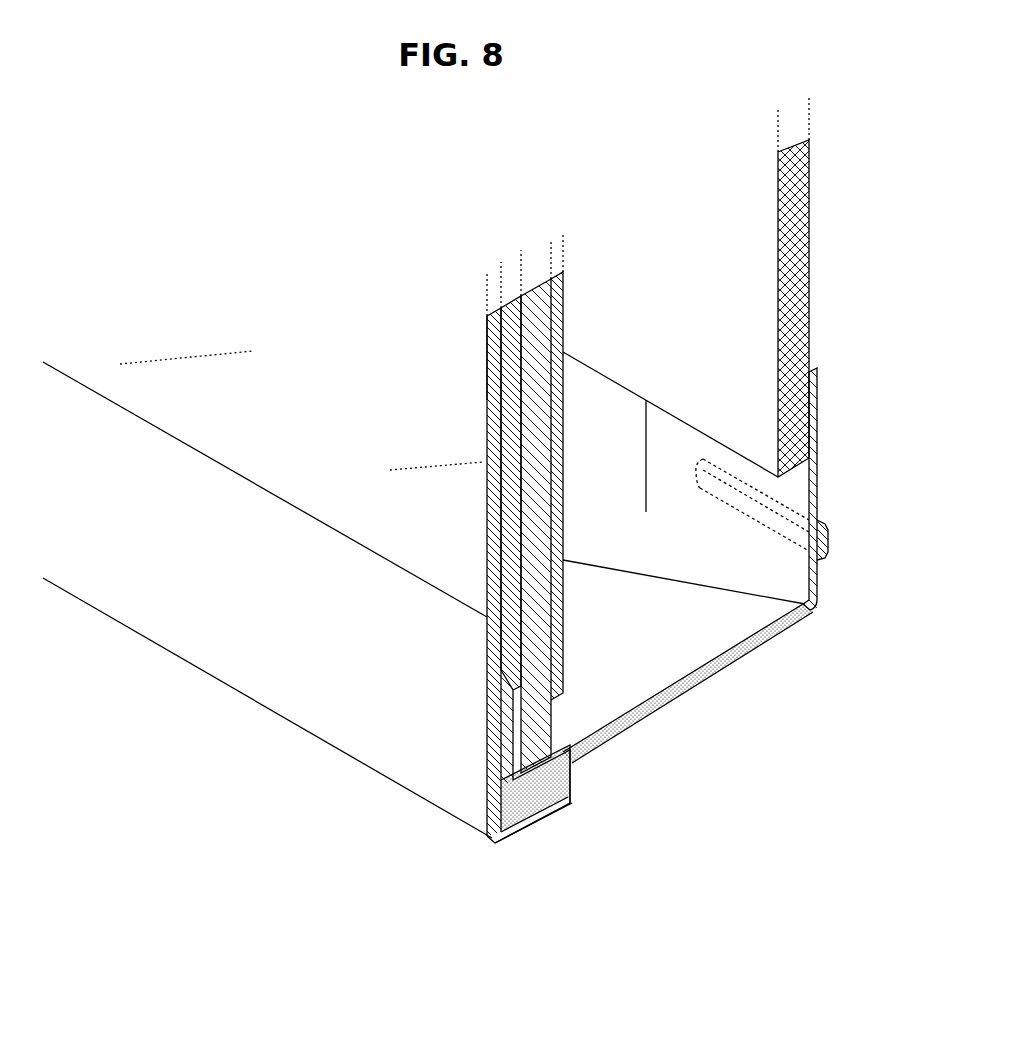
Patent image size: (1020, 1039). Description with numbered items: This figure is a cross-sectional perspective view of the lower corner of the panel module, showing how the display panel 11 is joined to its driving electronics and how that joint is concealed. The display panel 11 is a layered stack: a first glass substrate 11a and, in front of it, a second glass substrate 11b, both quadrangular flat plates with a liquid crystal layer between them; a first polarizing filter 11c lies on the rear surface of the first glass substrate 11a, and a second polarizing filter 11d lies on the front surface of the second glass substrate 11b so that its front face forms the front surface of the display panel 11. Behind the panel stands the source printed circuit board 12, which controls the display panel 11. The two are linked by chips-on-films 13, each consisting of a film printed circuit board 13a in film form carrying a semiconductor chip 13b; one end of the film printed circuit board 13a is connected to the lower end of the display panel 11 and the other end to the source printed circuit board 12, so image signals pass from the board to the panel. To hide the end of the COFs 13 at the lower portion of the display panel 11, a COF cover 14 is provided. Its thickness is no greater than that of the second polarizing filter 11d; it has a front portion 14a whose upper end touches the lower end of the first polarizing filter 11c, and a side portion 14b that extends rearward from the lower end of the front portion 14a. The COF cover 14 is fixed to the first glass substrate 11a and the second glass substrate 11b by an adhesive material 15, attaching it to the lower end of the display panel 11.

The display panel 11 is at (288, 482).
The first glass substrate 11a is at (537, 296).
The second glass substrate 11b is at (510, 300).
The first polarizing filter 11c is at (563, 300).
The second polarizing filter 11d is at (487, 337).
The source printed circuit board 12 is at (814, 198).
The chips-on-films 13 is at (748, 660).
The film printed circuit board 13a is at (815, 616).
The semiconductor chip 13b is at (829, 540).
The COF cover 14 is at (330, 743).
The front portion 14a is at (430, 778).
The side portion 14b is at (535, 822).
The adhesive material 15 is at (573, 773).